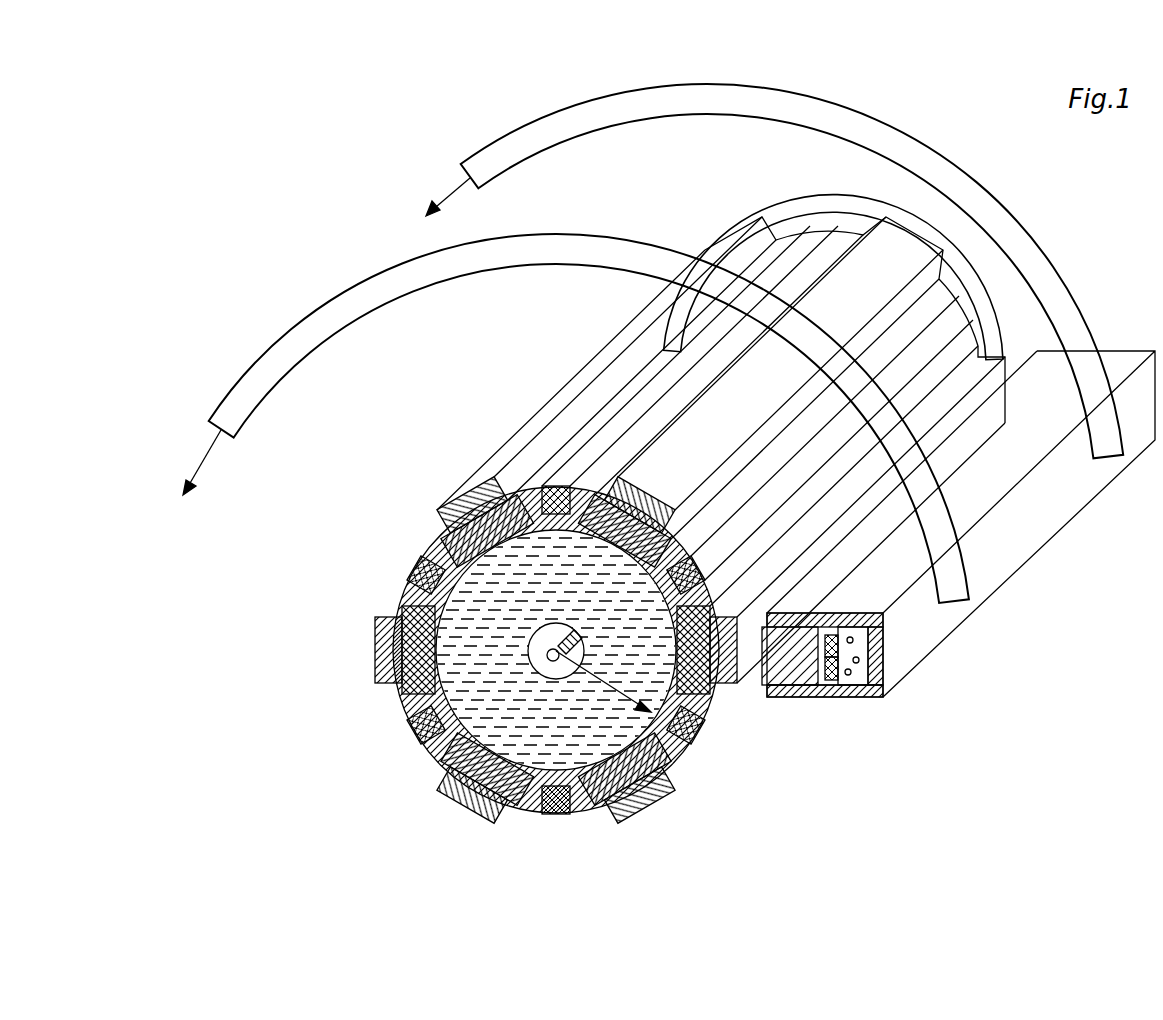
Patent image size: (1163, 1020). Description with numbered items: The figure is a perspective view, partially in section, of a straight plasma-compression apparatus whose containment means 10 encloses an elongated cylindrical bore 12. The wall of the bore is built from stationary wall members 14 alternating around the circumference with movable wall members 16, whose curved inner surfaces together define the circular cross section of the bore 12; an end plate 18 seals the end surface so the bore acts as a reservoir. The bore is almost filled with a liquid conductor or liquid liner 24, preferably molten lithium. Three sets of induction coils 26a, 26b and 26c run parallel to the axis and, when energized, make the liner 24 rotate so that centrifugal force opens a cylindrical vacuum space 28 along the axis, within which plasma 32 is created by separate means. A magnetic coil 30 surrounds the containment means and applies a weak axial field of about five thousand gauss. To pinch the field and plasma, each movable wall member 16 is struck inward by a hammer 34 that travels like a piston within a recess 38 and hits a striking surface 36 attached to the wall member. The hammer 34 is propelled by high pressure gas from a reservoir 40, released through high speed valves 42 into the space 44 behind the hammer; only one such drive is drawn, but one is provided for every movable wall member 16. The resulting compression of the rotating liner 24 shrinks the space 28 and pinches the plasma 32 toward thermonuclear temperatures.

The containment means 10 is at (352, 746).
The elongated cylindrical bore 12 is at (546, 732).
The stationary wall members 14 is at (446, 545).
The movable wall members 16 is at (470, 505).
The end plate 18 is at (975, 268).
The liquid conductor (liquid liner) 24 is at (556, 650).
The induction coil 26a is at (556, 487).
The induction coil 26b is at (432, 742).
The induction coil 26c is at (418, 578).
The cylindrical space (vacuum) 28 is at (547, 641).
The magnetic coil 30 is at (560, 236).
The plasma 32 is at (580, 656).
The hammer 34 is at (800, 698).
The striking surface 36 is at (458, 505).
The recess 38 is at (790, 630).
The reservoir 40 is at (885, 640).
The high speed valves 42 is at (838, 648).
The space behind the hammer 44 is at (850, 640).